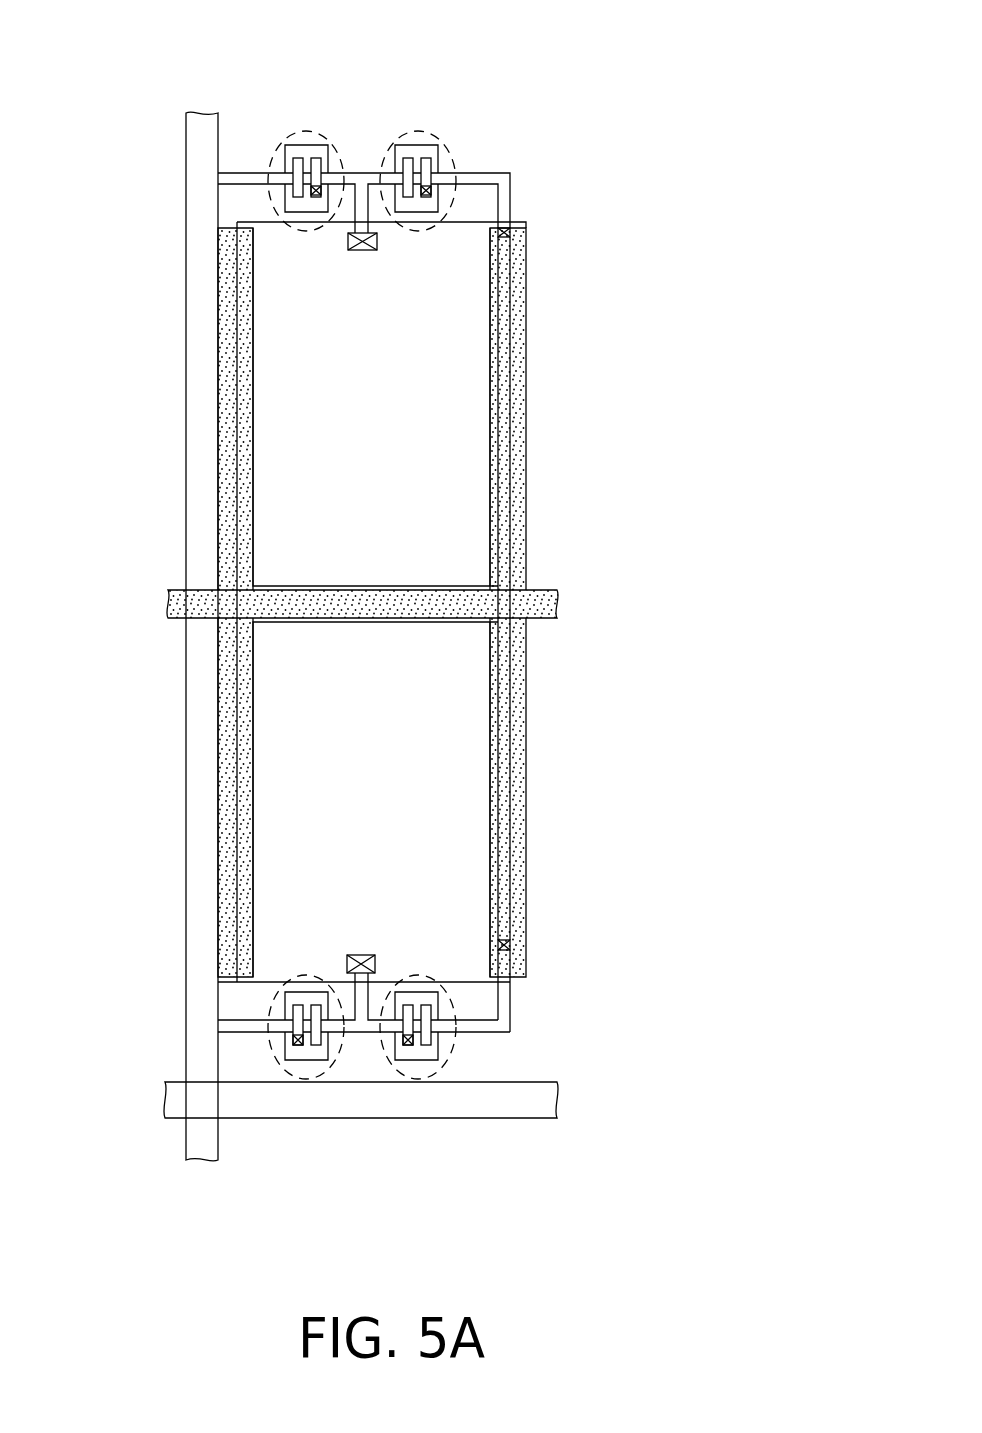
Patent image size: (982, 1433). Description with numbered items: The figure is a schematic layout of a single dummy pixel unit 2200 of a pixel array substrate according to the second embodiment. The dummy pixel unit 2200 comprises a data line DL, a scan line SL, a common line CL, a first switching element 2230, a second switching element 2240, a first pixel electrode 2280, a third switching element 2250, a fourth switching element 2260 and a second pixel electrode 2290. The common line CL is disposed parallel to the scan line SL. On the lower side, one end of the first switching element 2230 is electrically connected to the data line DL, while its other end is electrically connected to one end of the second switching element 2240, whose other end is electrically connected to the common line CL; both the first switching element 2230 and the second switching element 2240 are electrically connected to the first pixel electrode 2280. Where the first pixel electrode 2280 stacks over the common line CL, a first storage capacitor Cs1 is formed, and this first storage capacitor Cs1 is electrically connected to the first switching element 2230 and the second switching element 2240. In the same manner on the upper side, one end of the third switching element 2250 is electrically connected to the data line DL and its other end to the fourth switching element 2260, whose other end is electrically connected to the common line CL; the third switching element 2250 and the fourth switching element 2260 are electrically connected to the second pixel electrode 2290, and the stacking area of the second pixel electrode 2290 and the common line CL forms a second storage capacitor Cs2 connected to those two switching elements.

The dummy pixel unit 2200 is at (820, 1222).
The first switching element 2230 is at (222, 1010).
The second switching element 2240 is at (452, 1055).
The third switching element 2250 is at (312, 128).
The fourth switching element 2260 is at (413, 128).
The first pixel electrode 2280 is at (455, 767).
The second pixel electrode 2290 is at (462, 327).
The data line DL is at (205, 230).
The scan line SL is at (437, 1112).
The common line CL is at (270, 604).
The first storage capacitor Cs1 is at (246, 800).
The second storage capacitor Cs2 is at (245, 377).